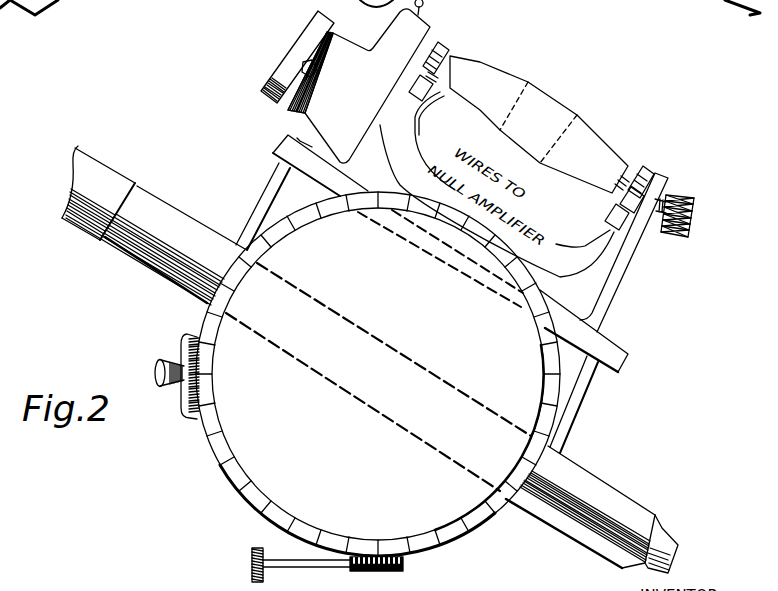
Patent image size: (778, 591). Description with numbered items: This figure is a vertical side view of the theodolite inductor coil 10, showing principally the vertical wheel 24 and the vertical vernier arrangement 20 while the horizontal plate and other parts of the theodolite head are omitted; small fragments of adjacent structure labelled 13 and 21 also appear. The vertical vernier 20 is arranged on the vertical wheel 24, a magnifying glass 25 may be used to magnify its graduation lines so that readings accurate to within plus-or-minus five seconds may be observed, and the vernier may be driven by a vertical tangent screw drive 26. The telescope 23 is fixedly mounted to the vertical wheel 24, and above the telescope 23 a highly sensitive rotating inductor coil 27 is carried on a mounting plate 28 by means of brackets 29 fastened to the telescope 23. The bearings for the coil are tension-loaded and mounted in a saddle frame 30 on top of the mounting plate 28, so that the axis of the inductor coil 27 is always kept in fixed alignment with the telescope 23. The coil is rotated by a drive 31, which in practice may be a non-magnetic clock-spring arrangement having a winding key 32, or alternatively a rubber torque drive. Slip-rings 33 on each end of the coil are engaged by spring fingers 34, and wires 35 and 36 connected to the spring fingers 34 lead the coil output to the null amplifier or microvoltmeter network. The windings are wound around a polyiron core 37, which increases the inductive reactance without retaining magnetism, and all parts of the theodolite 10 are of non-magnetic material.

The theodolite inductor coil 10 is at (659, 323).
The frame member 13 is at (365, 5).
The vertical vernier arrangement 20 is at (193, 420).
The pivot pin 21 is at (434, 7).
The telescope 23 is at (613, 487).
The vertical wheel 24 is at (230, 446).
The magnifying glass 25 is at (162, 388).
The vertical tangent screw drive 26 is at (307, 571).
The rotating inductor coil 27 is at (505, 72).
The mounting plate 28 is at (623, 363).
The brackets 29 is at (262, 197).
The saddle frame 30 is at (627, 257).
The drive 31 is at (292, 108).
The winding key 32 is at (293, 38).
The slip-rings 33 is at (440, 46).
The spring fingers 34 is at (428, 100).
The wire 35 is at (417, 130).
The wire 36 is at (606, 234).
The polyiron core 37 is at (575, 118).